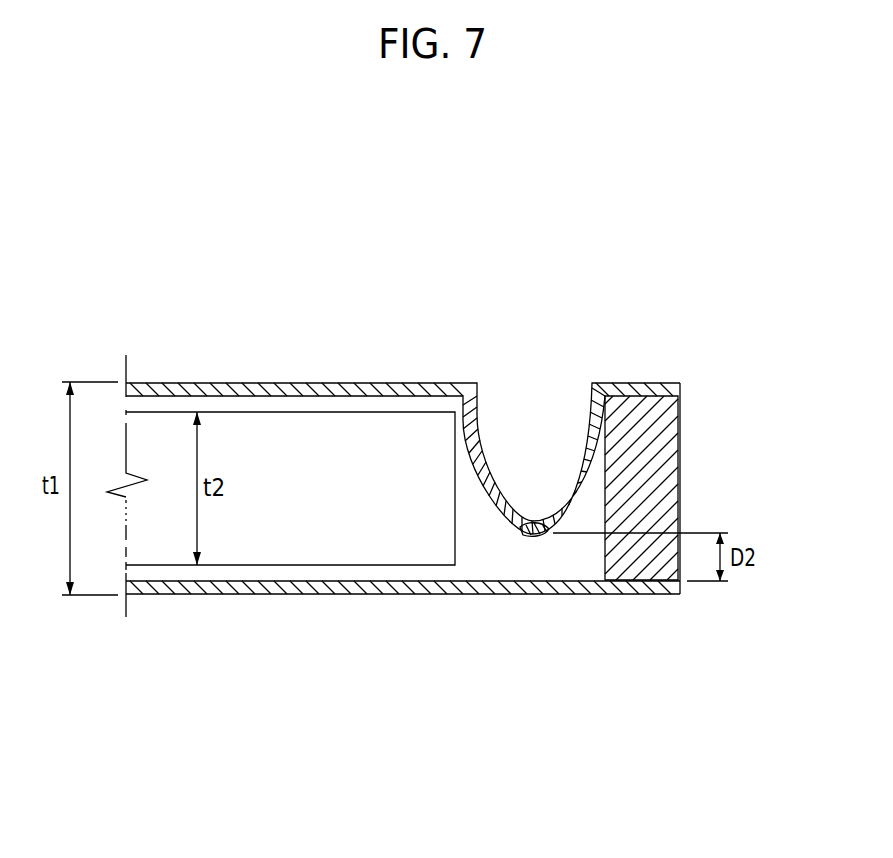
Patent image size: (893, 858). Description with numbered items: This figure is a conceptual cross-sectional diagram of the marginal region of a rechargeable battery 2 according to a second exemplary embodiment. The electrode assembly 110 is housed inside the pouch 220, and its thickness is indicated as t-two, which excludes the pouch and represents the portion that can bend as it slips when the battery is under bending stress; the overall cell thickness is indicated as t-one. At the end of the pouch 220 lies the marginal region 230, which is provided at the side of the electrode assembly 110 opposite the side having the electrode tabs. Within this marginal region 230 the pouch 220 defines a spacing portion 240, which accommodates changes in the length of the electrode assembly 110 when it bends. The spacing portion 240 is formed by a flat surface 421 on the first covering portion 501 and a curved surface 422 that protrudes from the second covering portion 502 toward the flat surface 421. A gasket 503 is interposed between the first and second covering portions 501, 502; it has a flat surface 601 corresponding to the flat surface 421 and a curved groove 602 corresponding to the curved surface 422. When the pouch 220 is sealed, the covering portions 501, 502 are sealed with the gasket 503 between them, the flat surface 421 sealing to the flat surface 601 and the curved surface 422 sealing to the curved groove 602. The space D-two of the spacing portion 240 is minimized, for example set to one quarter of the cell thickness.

The rechargeable battery 2 is at (410, 235).
The electrode assembly 110 is at (267, 565).
The pouch 220 is at (735, 812).
The marginal region 230 is at (467, 478).
The spacing portion 240 is at (540, 500).
The flat surface 421 is at (538, 588).
The curved surface 422 is at (507, 517).
The first covering portion 501 is at (352, 585).
The second covering portion 502 is at (332, 388).
The gasket 503 is at (655, 442).
The flat surface 601 is at (553, 580).
The curved groove 602 is at (517, 528).